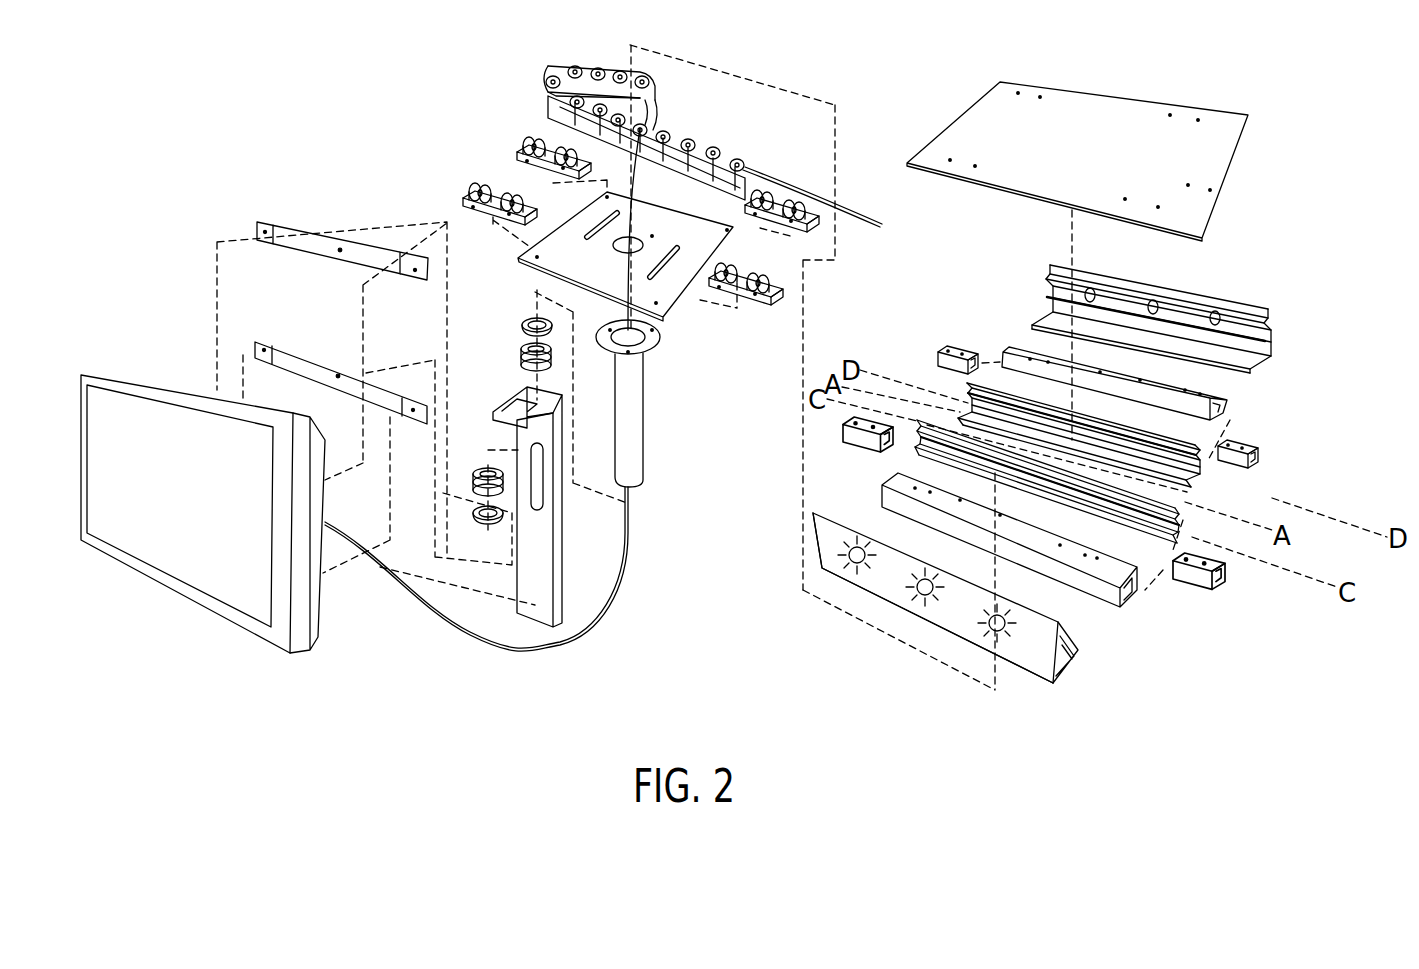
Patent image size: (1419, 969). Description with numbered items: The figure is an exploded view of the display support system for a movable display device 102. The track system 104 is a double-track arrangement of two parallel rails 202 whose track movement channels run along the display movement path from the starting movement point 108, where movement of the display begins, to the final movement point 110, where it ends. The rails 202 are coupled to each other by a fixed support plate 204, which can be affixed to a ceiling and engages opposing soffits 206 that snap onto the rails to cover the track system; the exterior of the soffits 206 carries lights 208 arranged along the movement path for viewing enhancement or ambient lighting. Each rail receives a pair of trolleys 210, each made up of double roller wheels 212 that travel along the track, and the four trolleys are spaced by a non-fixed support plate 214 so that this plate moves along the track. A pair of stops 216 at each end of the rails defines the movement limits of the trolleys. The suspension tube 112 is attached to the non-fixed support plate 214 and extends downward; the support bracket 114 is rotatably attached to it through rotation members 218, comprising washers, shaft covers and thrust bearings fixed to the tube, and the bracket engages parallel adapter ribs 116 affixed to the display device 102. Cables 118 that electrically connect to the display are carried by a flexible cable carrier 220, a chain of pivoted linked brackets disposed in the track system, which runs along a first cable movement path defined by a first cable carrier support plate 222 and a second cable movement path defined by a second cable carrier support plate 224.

The display device 102 is at (317, 627).
The track system 104 is at (1033, 665).
The starting movement point 108 is at (1196, 506).
The final movement point 110 is at (915, 411).
The suspension tube 112 is at (638, 443).
The support bracket 114 is at (557, 562).
The adapter ribs 116 is at (295, 238).
The cables 118 is at (860, 210).
The rails 202 is at (1225, 398).
The fixed support plate 204 is at (1117, 105).
The soffits 206 is at (1273, 320).
The lights 208 is at (923, 603).
The trolleys 210 is at (463, 199).
The wheels 212 is at (512, 188).
The non-fixed support plate 214 is at (663, 314).
The stops 216 is at (958, 350).
The rotation members 218 is at (518, 357).
The flexible cable carrier 220 is at (570, 66).
The first cable carrier support plate 222 is at (1095, 500).
The second cable carrier support plate 224 is at (1170, 443).